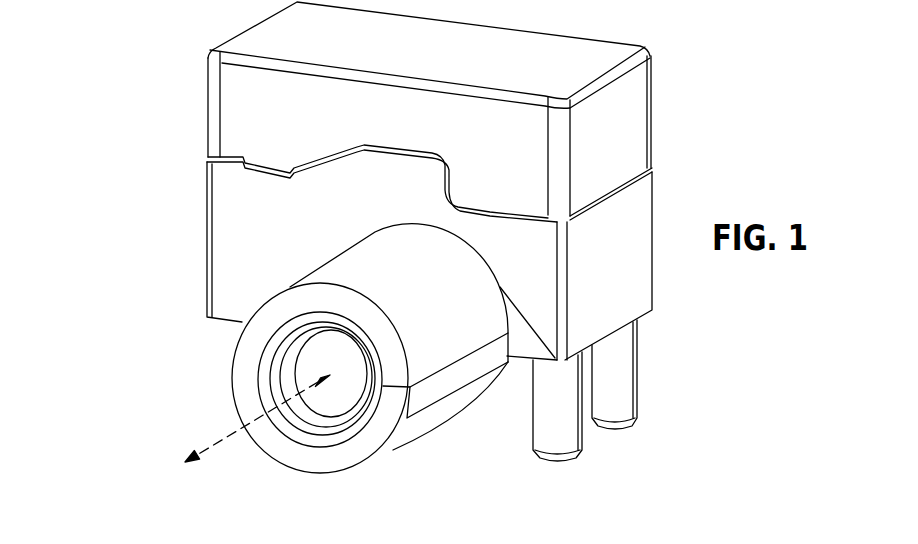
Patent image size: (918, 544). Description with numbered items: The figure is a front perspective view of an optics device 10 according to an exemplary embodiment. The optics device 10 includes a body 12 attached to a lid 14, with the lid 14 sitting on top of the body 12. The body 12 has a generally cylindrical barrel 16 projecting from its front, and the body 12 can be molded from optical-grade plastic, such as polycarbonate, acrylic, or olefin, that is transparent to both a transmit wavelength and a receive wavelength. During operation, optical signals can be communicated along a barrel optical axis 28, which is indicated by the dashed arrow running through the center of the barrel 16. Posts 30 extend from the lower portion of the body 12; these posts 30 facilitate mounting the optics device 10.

The optics device 10 is at (123, 50).
The body 12 is at (653, 282).
The lid 14 is at (640, 115).
The barrel 16 is at (398, 452).
The barrel optical axis 28 is at (223, 440).
The posts 30 is at (558, 463).